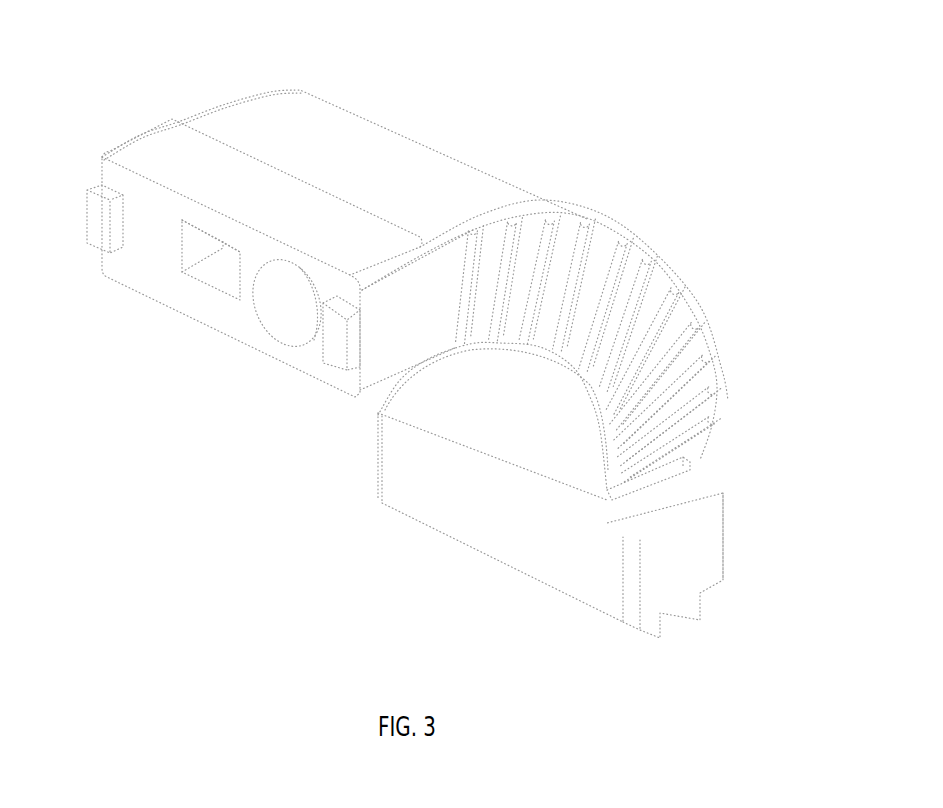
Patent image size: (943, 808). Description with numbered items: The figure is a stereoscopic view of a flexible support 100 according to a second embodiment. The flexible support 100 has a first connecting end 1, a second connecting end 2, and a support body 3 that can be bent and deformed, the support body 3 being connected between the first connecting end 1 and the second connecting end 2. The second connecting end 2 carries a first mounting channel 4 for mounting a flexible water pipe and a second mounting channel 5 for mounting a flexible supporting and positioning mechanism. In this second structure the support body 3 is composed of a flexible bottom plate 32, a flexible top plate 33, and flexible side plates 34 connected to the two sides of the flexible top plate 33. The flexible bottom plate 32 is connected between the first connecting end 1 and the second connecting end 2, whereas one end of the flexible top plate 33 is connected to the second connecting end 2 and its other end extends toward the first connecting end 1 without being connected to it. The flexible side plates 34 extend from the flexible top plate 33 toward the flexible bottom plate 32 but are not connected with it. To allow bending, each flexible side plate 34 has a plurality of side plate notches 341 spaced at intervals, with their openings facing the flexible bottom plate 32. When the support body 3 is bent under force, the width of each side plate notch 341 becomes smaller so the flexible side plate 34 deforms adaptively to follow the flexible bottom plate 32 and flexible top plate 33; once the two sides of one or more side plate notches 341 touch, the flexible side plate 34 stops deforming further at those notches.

The flexible support 100 is at (187, 473).
The first connecting end 1 is at (500, 543).
The second connecting end 2 is at (158, 155).
The support body 3 is at (543, 150).
The first mounting channel 4 is at (307, 325).
The second mounting channel 5 is at (212, 283).
The flexible bottom plate 32 is at (485, 412).
The flexible top plate 33 is at (452, 182).
The flexible side plate 34 is at (648, 302).
The side plate notch 341 is at (555, 308).